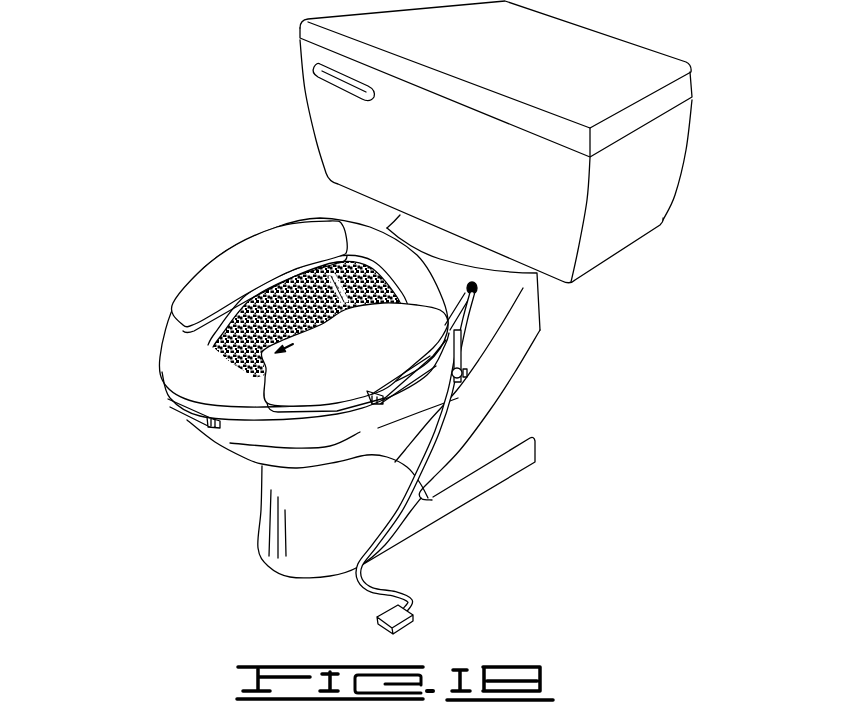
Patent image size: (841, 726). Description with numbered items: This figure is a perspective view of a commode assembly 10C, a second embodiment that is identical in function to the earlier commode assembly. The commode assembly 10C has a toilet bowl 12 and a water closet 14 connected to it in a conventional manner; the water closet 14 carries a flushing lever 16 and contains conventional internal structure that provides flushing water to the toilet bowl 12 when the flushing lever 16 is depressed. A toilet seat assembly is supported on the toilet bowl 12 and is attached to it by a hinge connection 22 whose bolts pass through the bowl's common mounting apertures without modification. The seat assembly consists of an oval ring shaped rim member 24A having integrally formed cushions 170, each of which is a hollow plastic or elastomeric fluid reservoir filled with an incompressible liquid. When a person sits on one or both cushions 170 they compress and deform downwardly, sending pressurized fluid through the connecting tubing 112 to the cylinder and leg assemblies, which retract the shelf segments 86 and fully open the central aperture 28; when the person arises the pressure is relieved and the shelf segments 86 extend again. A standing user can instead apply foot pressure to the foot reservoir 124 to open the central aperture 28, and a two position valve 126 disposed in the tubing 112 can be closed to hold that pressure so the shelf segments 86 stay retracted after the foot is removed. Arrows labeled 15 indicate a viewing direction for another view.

The commode assembly 10C is at (326, 264).
The toilet bowl 12 is at (285, 512).
The water closet 14 is at (680, 143).
The section view direction indicator 15 is at (283, 278).
The flushing lever 16 is at (358, 96).
The hinge connection 22 is at (478, 292).
The rim member 24A is at (178, 407).
The central aperture 28 is at (228, 368).
The shelf segments 86 is at (312, 277).
The connecting tubing 112 is at (450, 425).
The foot reservoir 124 is at (398, 613).
The two position valve 126 is at (465, 356).
The cushions 170 is at (198, 295).